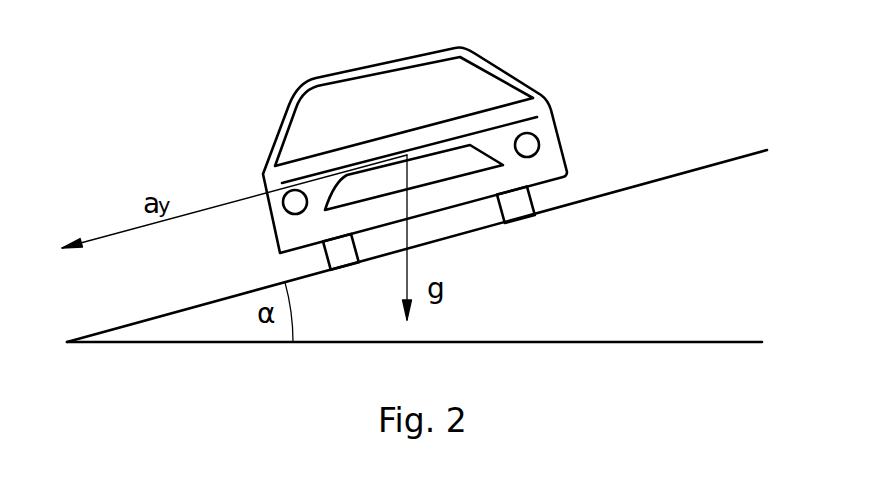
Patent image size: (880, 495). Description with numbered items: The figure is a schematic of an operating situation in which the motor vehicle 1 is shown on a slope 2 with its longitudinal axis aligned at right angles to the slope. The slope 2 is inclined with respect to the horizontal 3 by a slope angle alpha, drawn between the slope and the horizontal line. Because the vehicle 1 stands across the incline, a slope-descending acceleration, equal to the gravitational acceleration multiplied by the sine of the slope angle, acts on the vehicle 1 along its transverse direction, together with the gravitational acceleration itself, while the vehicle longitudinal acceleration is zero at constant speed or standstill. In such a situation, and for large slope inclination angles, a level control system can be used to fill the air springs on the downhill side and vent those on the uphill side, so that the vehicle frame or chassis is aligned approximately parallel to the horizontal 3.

The vehicle 1 is at (540, 92).
The slope 2 is at (665, 177).
The horizontal 3 is at (588, 340).